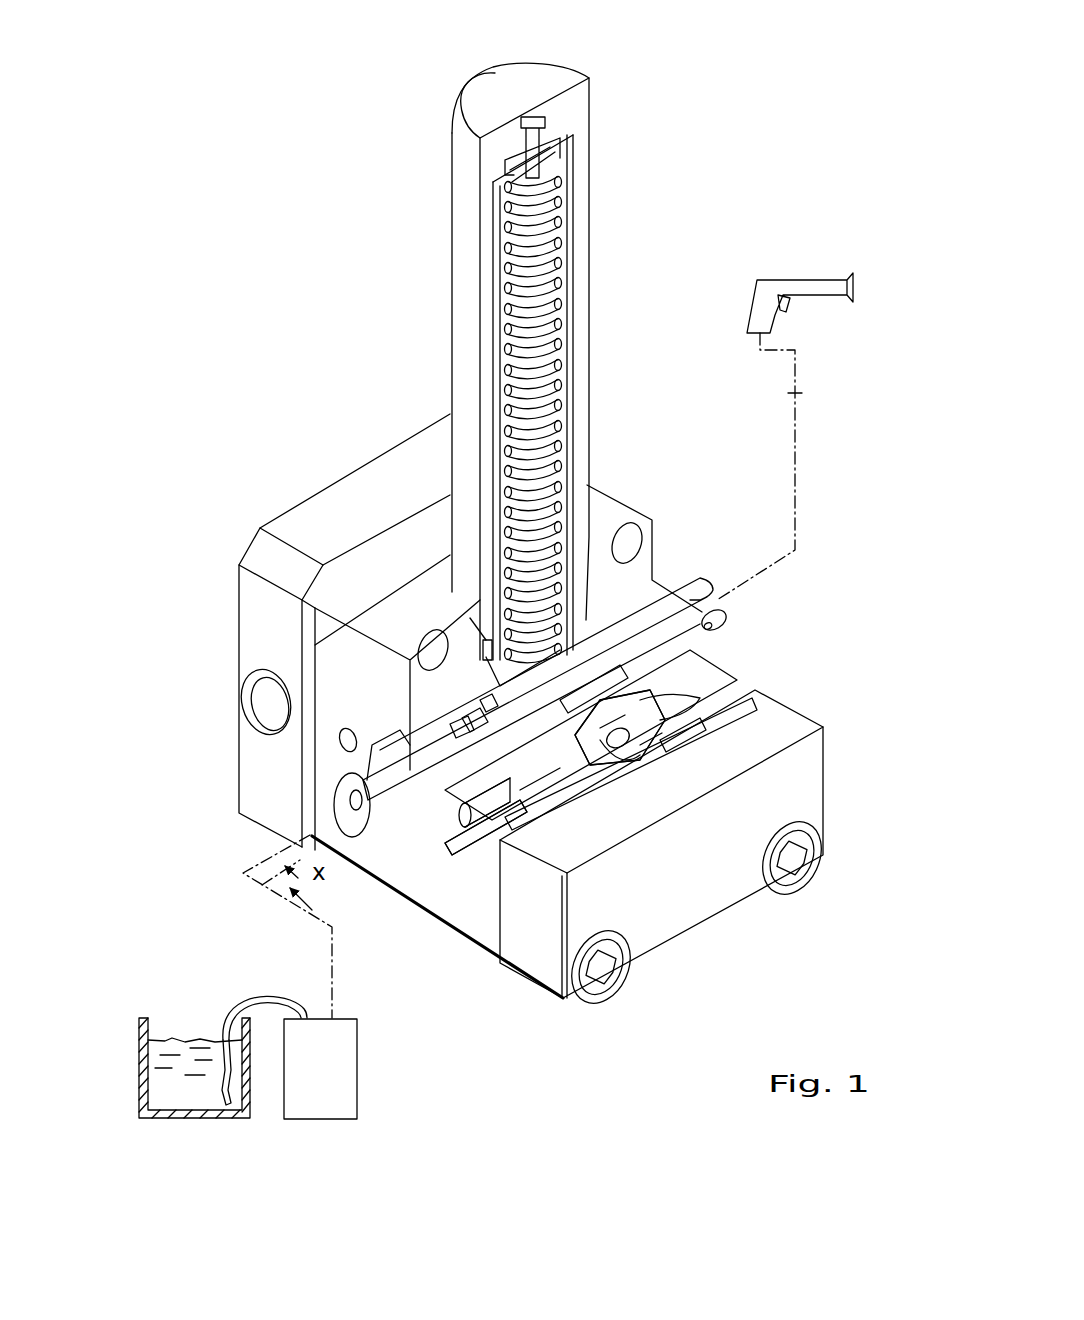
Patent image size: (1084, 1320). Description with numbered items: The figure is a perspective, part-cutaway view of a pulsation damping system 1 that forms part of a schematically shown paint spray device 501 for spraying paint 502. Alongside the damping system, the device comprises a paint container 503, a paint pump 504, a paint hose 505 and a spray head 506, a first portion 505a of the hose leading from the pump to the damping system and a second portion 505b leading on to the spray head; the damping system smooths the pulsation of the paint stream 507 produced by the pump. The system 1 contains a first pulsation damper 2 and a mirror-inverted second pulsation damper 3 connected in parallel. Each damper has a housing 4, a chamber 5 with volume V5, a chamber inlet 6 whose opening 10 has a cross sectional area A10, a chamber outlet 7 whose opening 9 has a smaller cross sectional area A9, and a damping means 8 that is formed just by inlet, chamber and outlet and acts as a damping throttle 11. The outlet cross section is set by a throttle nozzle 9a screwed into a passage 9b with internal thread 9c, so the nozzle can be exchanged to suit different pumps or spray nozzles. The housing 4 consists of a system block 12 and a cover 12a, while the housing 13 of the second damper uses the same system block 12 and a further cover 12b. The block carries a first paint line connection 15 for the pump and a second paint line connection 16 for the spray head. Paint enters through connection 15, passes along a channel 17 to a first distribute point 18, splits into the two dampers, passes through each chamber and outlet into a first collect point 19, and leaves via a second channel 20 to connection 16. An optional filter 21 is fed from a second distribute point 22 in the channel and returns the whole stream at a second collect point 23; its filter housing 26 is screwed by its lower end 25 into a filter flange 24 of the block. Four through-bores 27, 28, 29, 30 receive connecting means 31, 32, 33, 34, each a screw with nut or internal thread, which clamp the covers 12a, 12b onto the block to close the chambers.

The pulsation damping system 1 is at (300, 256).
The pulsation damper 2 is at (758, 658).
The second pulsation damper 3 is at (662, 508).
The housing 4 is at (790, 680).
The chamber 5 is at (700, 722).
The chamber inlet 6 is at (512, 803).
The chamber outlet 7 is at (634, 717).
The damping means 8 is at (618, 785).
The opening 9 is at (630, 720).
The throttle nozzle 9a is at (630, 760).
The passage 9b is at (688, 715).
The internal thread 9c is at (655, 750).
The opening 10 is at (500, 796).
The damping throttle 11 is at (537, 827).
The system block 12 is at (400, 562).
The cover 12a is at (812, 808).
The further cover 12b is at (240, 652).
The housing 13 is at (275, 488).
The first paint line connection 15 is at (355, 768).
The second paint line connection 16 is at (694, 580).
The channel 17 is at (396, 820).
The first distribute point 18 is at (484, 702).
The first collect point 19 is at (590, 700).
The second channel 20 is at (722, 652).
The filter 21 is at (602, 180).
The second distribute point 22 is at (455, 725).
The second collect point 23 is at (470, 720).
The filter flange 24 is at (470, 622).
The lower end 25 is at (478, 608).
The filter housing 26 is at (592, 248).
The through-bore 27 is at (432, 652).
The through-bore 28 is at (627, 543).
The through-bore 29 is at (392, 895).
The through-bore 30 is at (792, 650).
The connecting means 31 is at (240, 535).
The connecting means 32 is at (432, 395).
The connecting means 33 is at (605, 993).
The connecting means 34 is at (798, 886).
The cross sectional area A9 is at (612, 735).
The cross sectional area A10 is at (565, 762).
The volume V5 is at (690, 740).
The paint spray device 501 is at (772, 188).
The paint 502 is at (190, 1100).
The paint container 503 is at (140, 1040).
The paint pump 504 is at (340, 1050).
The paint hose 505 is at (796, 430).
The first portion 505a is at (262, 885).
The second portion 505b is at (796, 393).
The spray head 506 is at (798, 282).
The paint stream 507 is at (312, 900).